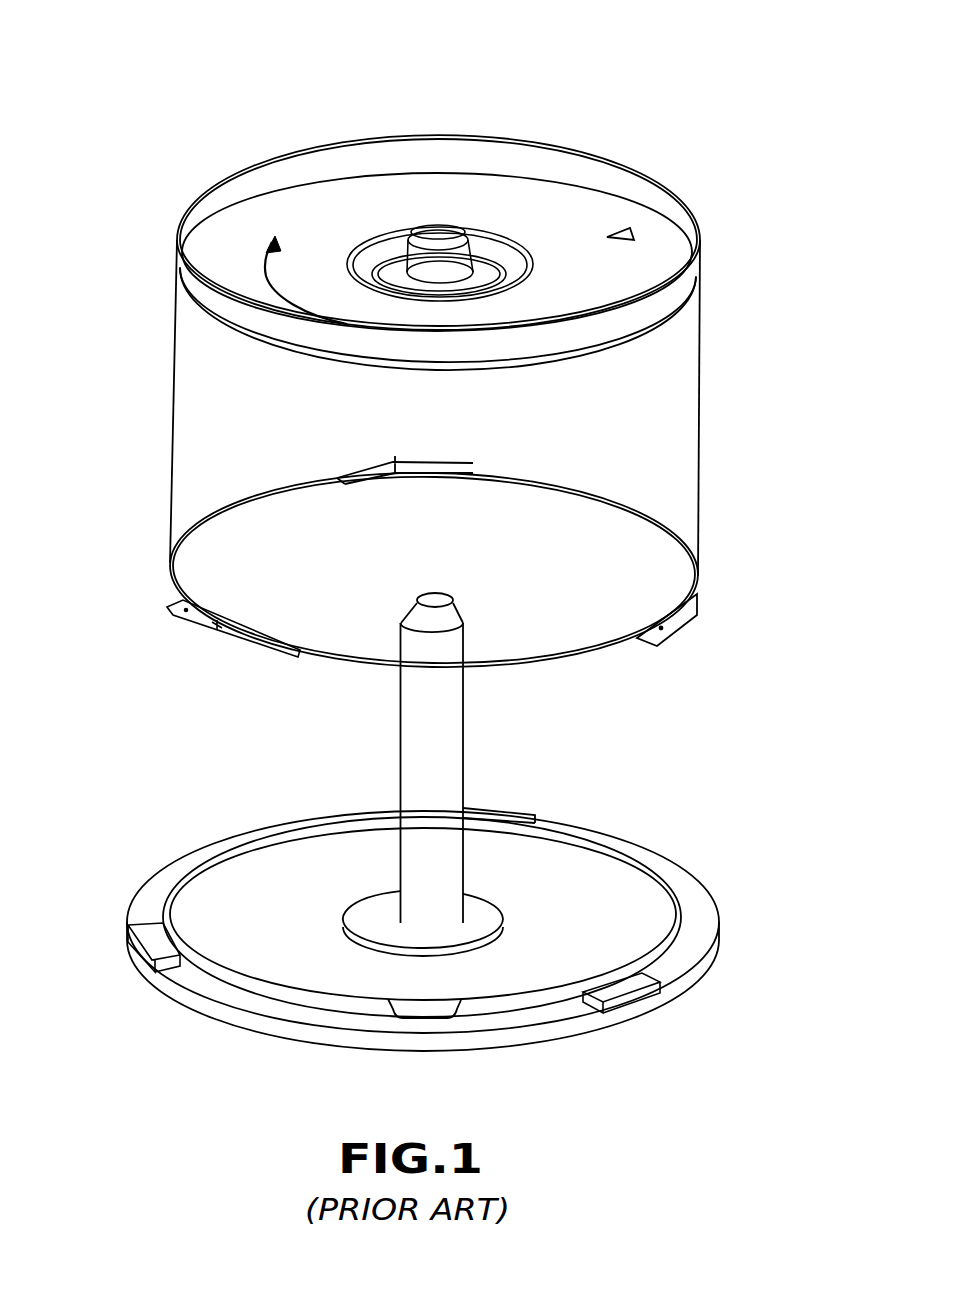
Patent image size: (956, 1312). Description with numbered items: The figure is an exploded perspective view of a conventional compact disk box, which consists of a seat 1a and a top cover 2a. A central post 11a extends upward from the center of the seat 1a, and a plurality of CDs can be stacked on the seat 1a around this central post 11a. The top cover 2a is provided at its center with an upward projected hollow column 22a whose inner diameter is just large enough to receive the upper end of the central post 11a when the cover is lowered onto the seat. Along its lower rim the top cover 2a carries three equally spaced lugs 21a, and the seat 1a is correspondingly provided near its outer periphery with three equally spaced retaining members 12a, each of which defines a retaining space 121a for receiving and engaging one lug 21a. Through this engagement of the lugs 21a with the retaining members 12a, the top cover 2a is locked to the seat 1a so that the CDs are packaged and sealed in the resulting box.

The seat 1a is at (697, 935).
The top cover 2a is at (697, 431).
The central post 11a is at (440, 736).
The retaining member 12a is at (148, 925).
The lug 21a is at (193, 618).
The hollow column 22a is at (440, 272).
The retaining space 121a is at (168, 965).